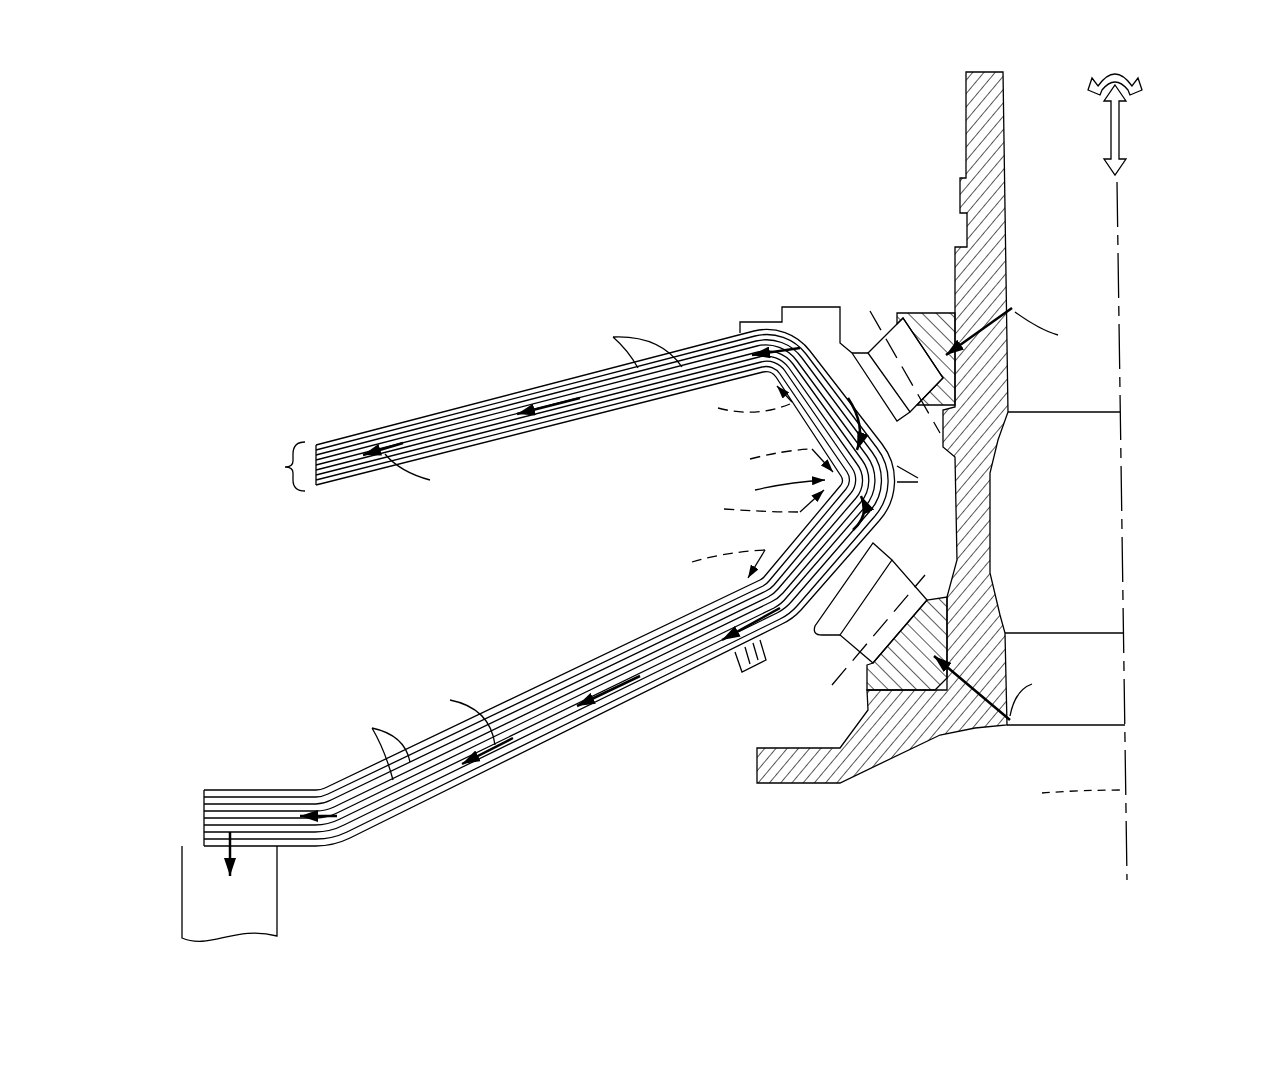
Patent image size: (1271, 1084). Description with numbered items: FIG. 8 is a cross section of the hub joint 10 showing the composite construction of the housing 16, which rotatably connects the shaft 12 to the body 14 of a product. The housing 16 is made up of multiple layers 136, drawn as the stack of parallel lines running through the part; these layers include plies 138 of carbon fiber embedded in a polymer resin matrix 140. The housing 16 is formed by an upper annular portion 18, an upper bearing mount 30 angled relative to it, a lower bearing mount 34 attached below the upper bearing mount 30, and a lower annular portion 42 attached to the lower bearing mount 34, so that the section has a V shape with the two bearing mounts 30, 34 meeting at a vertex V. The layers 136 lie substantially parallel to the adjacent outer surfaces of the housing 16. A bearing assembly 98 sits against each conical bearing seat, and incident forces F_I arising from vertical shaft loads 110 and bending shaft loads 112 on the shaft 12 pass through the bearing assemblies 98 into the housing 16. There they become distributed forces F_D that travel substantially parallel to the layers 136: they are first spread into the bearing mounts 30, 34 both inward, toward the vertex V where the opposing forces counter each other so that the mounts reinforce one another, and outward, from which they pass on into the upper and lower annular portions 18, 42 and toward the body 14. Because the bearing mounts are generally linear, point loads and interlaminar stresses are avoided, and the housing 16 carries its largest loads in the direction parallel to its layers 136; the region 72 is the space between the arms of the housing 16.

The hub joint 10 is at (228, 188).
The shaft 12 is at (966, 147).
The body 14 is at (278, 882).
The housing 16 is at (442, 386).
The upper annular portion 18 is at (340, 492).
The upper bearing mount 30 is at (812, 430).
The lower bearing mount 34 is at (792, 528).
The lower annular portion 42 is at (540, 746).
The cavity 72 is at (562, 618).
The bearing assembly 98 is at (870, 298).
The vertical shaft loads 110 is at (1125, 137).
The bending shaft loads 112 is at (1142, 82).
The layers 136 is at (284, 467).
The plies 138 is at (621, 345).
The polymer resin matrix 140 is at (365, 749).